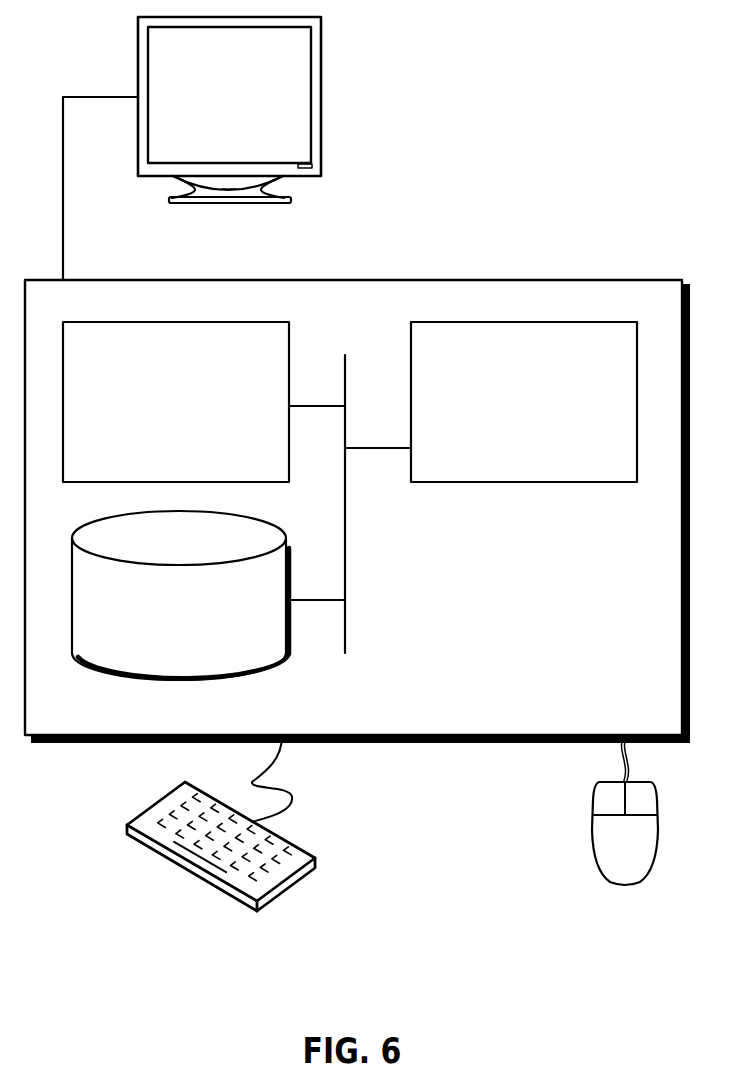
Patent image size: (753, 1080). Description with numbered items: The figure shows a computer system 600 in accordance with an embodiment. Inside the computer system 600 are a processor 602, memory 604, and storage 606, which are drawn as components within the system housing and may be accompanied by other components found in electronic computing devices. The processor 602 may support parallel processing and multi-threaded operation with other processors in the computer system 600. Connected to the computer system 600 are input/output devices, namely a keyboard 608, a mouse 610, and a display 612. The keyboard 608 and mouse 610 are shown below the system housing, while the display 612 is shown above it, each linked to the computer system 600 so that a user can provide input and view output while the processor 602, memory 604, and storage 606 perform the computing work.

The computer system 600 is at (400, 248).
The processor 602 is at (548, 413).
The memory 604 is at (198, 413).
The storage 606 is at (163, 626).
The keyboard 608 is at (145, 843).
The mouse 610 is at (645, 856).
The display 612 is at (192, 148).